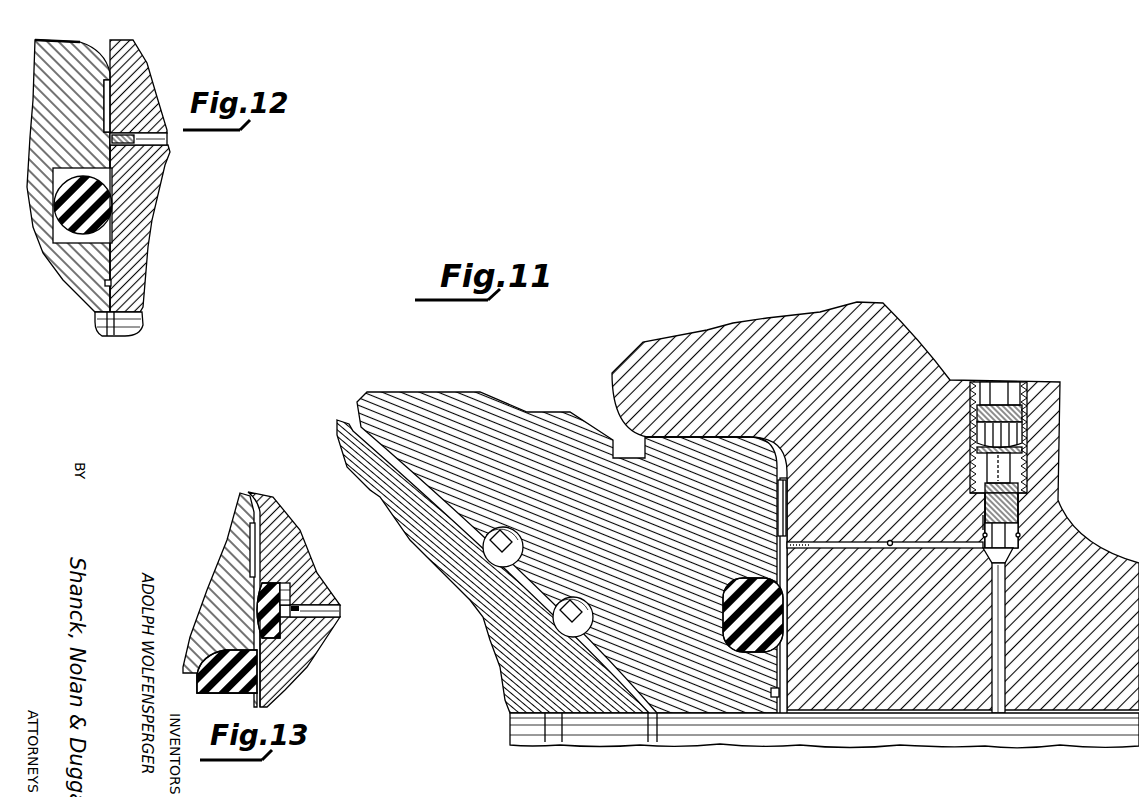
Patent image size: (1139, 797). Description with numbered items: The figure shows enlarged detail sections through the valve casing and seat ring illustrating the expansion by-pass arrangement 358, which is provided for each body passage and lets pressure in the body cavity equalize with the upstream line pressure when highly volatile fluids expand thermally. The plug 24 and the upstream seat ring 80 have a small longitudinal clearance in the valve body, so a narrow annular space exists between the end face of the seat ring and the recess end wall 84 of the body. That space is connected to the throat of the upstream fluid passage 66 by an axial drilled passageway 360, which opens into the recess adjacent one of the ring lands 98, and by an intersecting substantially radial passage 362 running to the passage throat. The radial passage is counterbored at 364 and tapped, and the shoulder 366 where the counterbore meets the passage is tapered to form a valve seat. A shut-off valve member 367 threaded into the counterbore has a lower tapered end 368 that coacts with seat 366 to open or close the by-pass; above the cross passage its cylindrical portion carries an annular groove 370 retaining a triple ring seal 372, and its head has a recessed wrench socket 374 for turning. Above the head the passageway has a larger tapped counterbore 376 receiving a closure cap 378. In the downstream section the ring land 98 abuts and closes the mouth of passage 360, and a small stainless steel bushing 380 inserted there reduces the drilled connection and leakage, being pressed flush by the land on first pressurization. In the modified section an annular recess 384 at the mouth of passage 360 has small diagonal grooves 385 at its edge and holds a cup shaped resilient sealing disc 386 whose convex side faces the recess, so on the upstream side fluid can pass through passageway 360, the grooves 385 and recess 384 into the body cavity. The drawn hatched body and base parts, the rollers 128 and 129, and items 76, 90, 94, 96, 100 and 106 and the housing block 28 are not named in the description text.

In FIG. 11, the plug 24 is at (447, 555).
In FIG. 11, the housing block 28 is at (897, 437).
In FIG. 12, the housing block 28 is at (147, 216).
In FIG. 13, the housing block 28 is at (307, 667).
In FIG. 11, the upstream fluid passage 66 is at (903, 714).
In FIG. 12, the upstream fluid passage 66 is at (143, 316).
In FIG. 11, the top surface of slide 76 is at (712, 440).
In FIG. 11, the upstream seat ring 80 is at (660, 530).
In FIG. 12, the upstream seat ring 80 is at (80, 133).
In FIG. 13, the upstream seat ring 80 is at (213, 580).
In FIG. 11, the recess end wall 84 is at (786, 481).
In FIG. 12, the recess end wall 84 is at (112, 257).
In FIG. 13, the recess end wall 84 is at (272, 694).
In FIG. 11, the sealing ring 90 is at (785, 625).
In FIG. 13, the sealing ring 90 is at (218, 686).
In FIG. 11, the groove 94 is at (787, 688).
In FIG. 11, the gap 96 is at (787, 505).
In FIG. 13, the gap 96 is at (255, 537).
In FIG. 11, the ring land 98 is at (787, 565).
In FIG. 12, the ring land 98 is at (112, 153).
In FIG. 13, the ring land 98 is at (256, 607).
In FIG. 11, the pin 100 is at (712, 721).
In FIG. 11, the fastening pin 106 is at (526, 721).
In FIG. 12, the fastening pin 106 is at (97, 320).
In FIG. 11, the roller 128 is at (515, 562).
In FIG. 11, the roller 129 is at (562, 636).
In FIG. 11, the by-pass arrangement 358 is at (960, 378).
In FIG. 11, the axial drilled passageway 360 is at (890, 541).
In FIG. 12, the axial drilled passageway 360 is at (172, 135).
In FIG. 13, the axial drilled passageway 360 is at (340, 617).
In FIG. 11, the radial passage 362 is at (1000, 715).
In FIG. 11, the counterbore 364 is at (1018, 472).
In FIG. 11, the shoulder 366 is at (1010, 563).
In FIG. 11, the shut-off valve member 367 is at (1018, 511).
In FIG. 11, the lower tapered end 368 is at (1018, 540).
In FIG. 11, the annular groove 370 is at (1005, 530).
In FIG. 11, the triple ring seal 372 is at (983, 522).
In FIG. 11, the recessed wrench socket 374 is at (1023, 446).
In FIG. 11, the larger counterbore 376 is at (1024, 405).
In FIG. 11, the closure cap 378 is at (1026, 384).
In FIG. 11, the stainless steel bushing 380 is at (798, 543).
In FIG. 12, the stainless steel bushing 380 is at (157, 84).
In FIG. 13, the annular recess 384 is at (285, 580).
In FIG. 13, the diagonal grooves 385 is at (290, 604).
In FIG. 13, the resilient sealing disc 386 is at (286, 590).